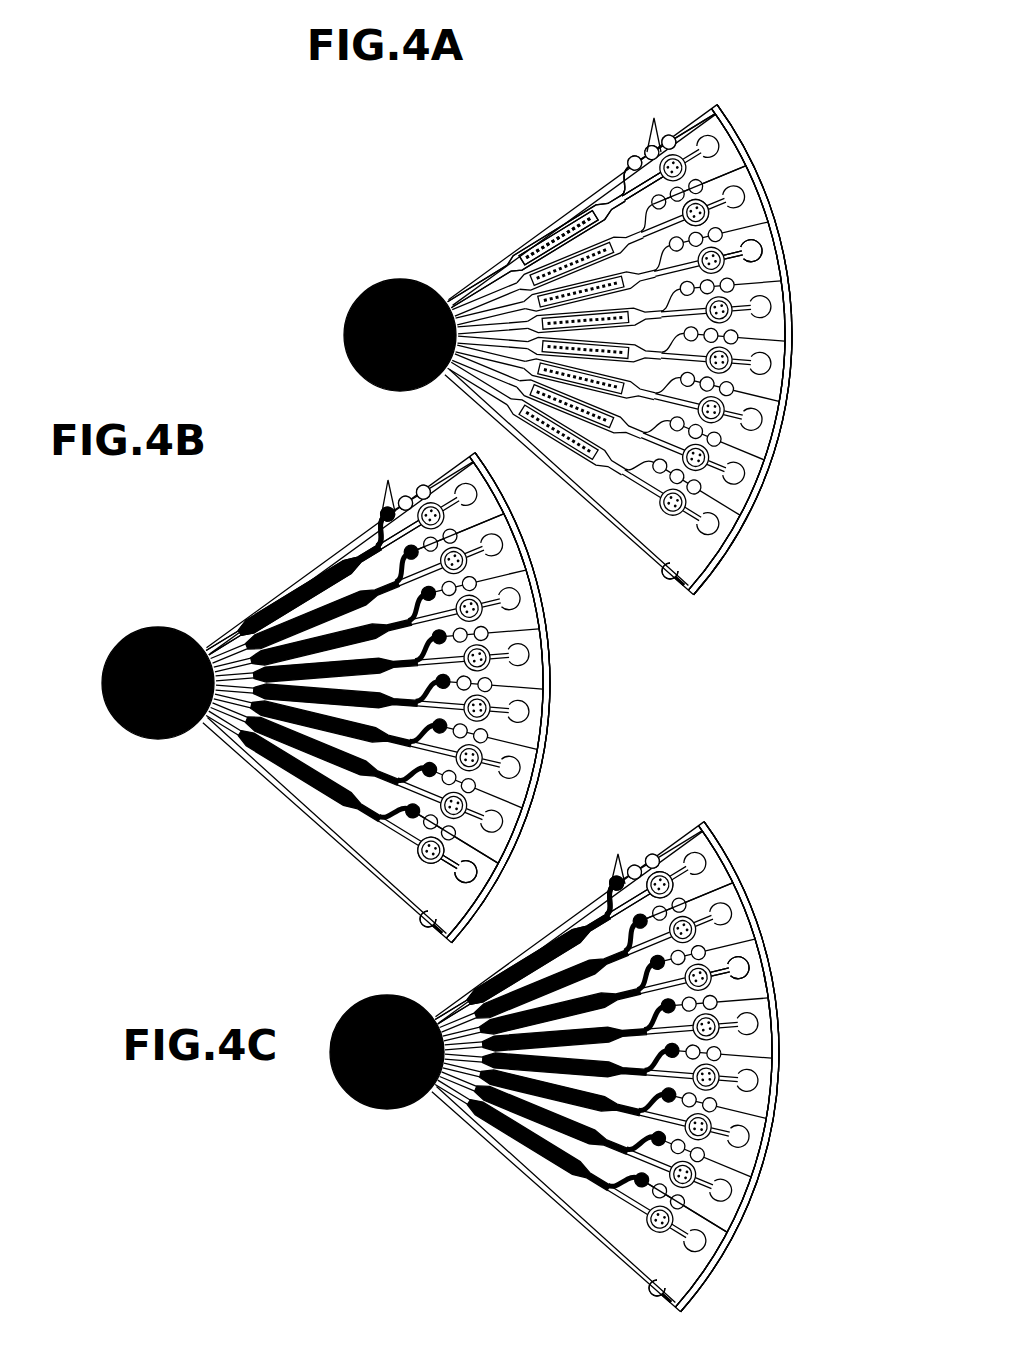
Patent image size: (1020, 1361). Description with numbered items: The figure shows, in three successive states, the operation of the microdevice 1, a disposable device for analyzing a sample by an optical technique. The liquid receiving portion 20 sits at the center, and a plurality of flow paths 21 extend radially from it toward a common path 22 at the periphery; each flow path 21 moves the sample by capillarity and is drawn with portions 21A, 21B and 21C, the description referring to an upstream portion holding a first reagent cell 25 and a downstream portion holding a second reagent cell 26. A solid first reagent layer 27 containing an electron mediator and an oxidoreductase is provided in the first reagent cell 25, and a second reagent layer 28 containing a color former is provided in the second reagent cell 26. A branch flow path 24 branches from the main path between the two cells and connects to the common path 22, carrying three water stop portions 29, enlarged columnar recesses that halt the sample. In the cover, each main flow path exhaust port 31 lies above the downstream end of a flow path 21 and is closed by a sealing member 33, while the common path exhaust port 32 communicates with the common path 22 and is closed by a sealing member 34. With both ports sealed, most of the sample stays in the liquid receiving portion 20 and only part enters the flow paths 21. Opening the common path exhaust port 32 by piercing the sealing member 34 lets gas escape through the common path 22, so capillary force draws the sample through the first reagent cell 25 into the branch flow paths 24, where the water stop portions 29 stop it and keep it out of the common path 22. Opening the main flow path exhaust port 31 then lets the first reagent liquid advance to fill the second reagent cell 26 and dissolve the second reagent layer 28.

In FIG. 4A, the microdevice 1 is at (616, 110).
In FIG. 4B, the microdevice 1 is at (280, 508).
In FIG. 4C, the microdevice 1 is at (852, 888).
In FIG. 4A, the liquid receiving portion 20 is at (421, 281).
In FIG. 4B, the liquid receiving portion 20 is at (175, 630).
In FIG. 4C, the liquid receiving portion 20 is at (400, 998).
In FIG. 4A, the flow path 21 is at (621, 188).
In FIG. 4A, the first channel portion 21A is at (603, 205).
In FIG. 4B, the first channel portion 21A is at (367, 547).
In FIG. 4C, the first channel portion 21A is at (599, 910).
In FIG. 4A, the second channel portion (stem) 21B is at (522, 261).
In FIG. 4B, the second channel portion (stem) 21B is at (267, 610).
In FIG. 4C, the second channel portion (stem) 21B is at (490, 987).
In FIG. 4A, the third channel portion 21C is at (717, 119).
In FIG. 4B, the third channel portion 21C is at (400, 833).
In FIG. 4C, the third channel portion 21C is at (712, 834).
In FIG. 4A, the common path 22 is at (790, 300).
In FIG. 4B, the common path 22 is at (548, 659).
In FIG. 4C, the common path 22 is at (770, 960).
In FIG. 4A, the branch flow path 24 is at (682, 122).
In FIG. 4B, the branch flow path 24 is at (440, 472).
In FIG. 4C, the branch flow path 24 is at (688, 826).
In FIG. 4A, the first reagent cell 25 is at (567, 227).
In FIG. 4B, the first reagent cell 25 is at (327, 570).
In FIG. 4C, the first reagent cell 25 is at (556, 945).
In FIG. 4A, the second reagent cell 26 is at (743, 200).
In FIG. 4B, the second reagent cell 26 is at (483, 515).
In FIG. 4C, the second reagent cell 26 is at (660, 868).
In FIG. 4A, the first reagent layer 27 is at (540, 250).
In FIG. 4A, the second reagent layer 28 is at (773, 233).
In FIG. 4B, the second reagent layer 28 is at (420, 863).
In FIG. 4C, the second reagent layer 28 is at (740, 925).
In FIG. 4A, the water stop portion 29 is at (654, 118).
In FIG. 4B, the water stop portion 29 is at (386, 498).
In FIG. 4C, the water stop portion 29 is at (619, 856).
In FIG. 4A, the main flow path exhaust port 31 is at (755, 158).
In FIG. 4B, the main flow path exhaust port 31 is at (456, 455).
In FIG. 4C, the main flow path exhaust port 31 is at (745, 882).
In FIG. 4A, the common path exhaust port 32 is at (690, 598).
In FIG. 4B, the common path exhaust port 32 is at (418, 917).
In FIG. 4C, the common path exhaust port 32 is at (645, 1288).
In FIG. 4A, the sealing member 33 is at (802, 350).
In FIG. 4B, the sealing member 33 is at (498, 698).
In FIG. 4C, the sealing member 33 is at (727, 1067).
In FIG. 4A, the sealing member 34 is at (673, 574).
In FIG. 4B, the sealing member 34 is at (431, 922).
In FIG. 4C, the sealing member 34 is at (660, 1291).